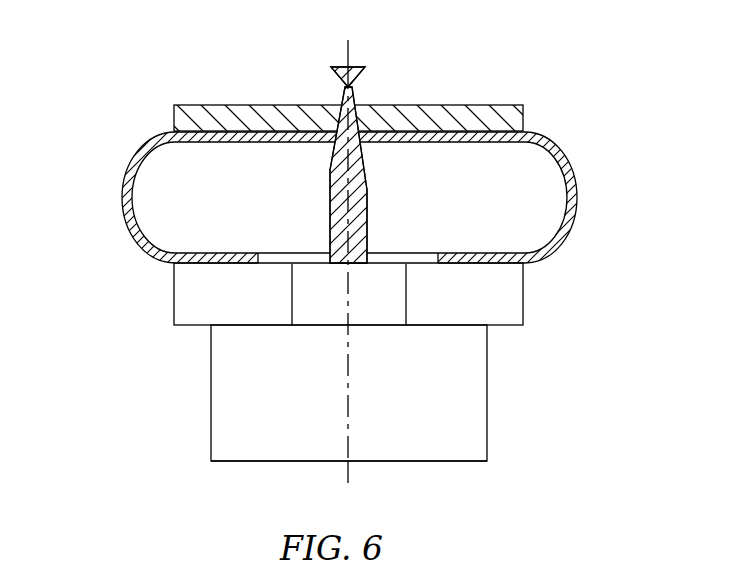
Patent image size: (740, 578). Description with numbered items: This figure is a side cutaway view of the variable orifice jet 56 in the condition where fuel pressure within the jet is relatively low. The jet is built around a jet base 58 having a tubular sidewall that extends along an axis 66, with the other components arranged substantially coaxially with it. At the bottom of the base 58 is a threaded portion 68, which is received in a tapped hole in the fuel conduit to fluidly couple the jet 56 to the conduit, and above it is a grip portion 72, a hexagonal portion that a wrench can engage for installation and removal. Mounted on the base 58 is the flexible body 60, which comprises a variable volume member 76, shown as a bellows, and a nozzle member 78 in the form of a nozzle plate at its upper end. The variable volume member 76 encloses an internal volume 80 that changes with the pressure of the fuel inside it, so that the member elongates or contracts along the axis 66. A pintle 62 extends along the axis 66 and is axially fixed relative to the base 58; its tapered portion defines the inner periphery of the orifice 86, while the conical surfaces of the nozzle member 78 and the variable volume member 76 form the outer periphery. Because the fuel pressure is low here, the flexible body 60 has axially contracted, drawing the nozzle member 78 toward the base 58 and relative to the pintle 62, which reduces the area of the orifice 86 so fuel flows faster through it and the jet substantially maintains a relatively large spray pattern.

The variable orifice jet 56 is at (614, 95).
The jet base 58 is at (499, 390).
The flexible body 60 is at (312, 166).
The pintle 62 is at (375, 75).
The axis 66 is at (350, 49).
The threaded portion 68 is at (470, 441).
The grip portion 72 is at (523, 297).
The variable volume member 76 is at (122, 203).
The nozzle member 78 is at (232, 103).
The internal volume 80 is at (231, 213).
The orifice 86 is at (327, 155).